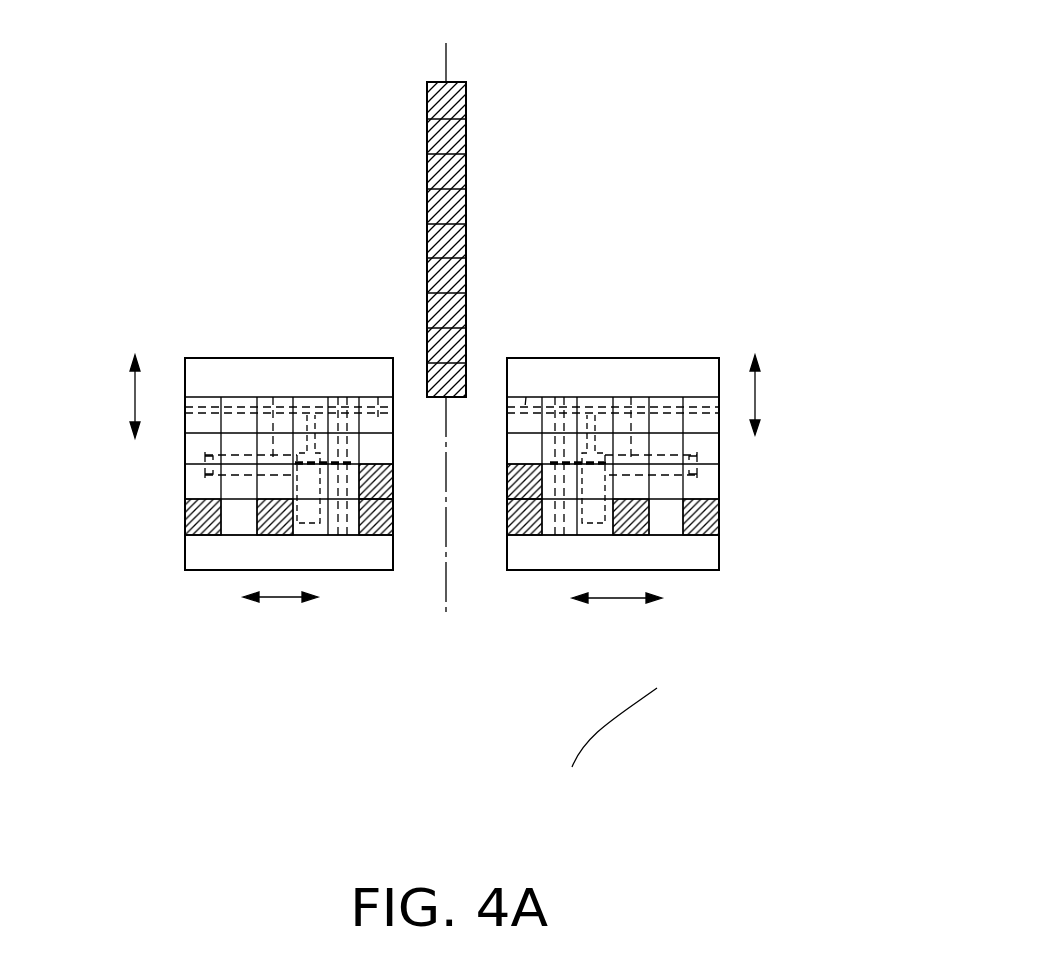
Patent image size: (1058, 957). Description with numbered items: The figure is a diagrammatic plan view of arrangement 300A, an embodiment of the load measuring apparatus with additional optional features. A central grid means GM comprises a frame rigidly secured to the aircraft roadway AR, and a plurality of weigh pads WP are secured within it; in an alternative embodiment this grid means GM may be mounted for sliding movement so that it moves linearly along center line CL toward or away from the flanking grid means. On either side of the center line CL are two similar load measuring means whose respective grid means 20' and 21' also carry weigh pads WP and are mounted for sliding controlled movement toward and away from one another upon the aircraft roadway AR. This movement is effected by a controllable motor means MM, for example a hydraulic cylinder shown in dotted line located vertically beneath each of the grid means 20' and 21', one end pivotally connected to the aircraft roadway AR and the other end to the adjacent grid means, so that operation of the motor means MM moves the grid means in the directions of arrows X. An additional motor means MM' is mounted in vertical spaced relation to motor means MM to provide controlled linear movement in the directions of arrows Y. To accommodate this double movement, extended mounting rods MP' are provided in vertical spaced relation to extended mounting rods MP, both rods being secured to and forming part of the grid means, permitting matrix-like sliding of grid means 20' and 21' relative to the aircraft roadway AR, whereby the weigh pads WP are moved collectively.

The arrangement 300A is at (642, 188).
The grid means GM is at (468, 204).
The center line CL is at (450, 582).
The grid means 20' is at (218, 565).
The grid means 21' is at (662, 552).
The weigh pads WP is at (462, 346).
The extended mounting rods MP' is at (463, 337).
The extended mounting rods MP is at (466, 417).
The motor means MM is at (470, 388).
The additional motor means MM' is at (451, 572).
The arrows y Y is at (133, 395).
The arrows x X is at (615, 625).
The aircraft roadway AR is at (607, 727).